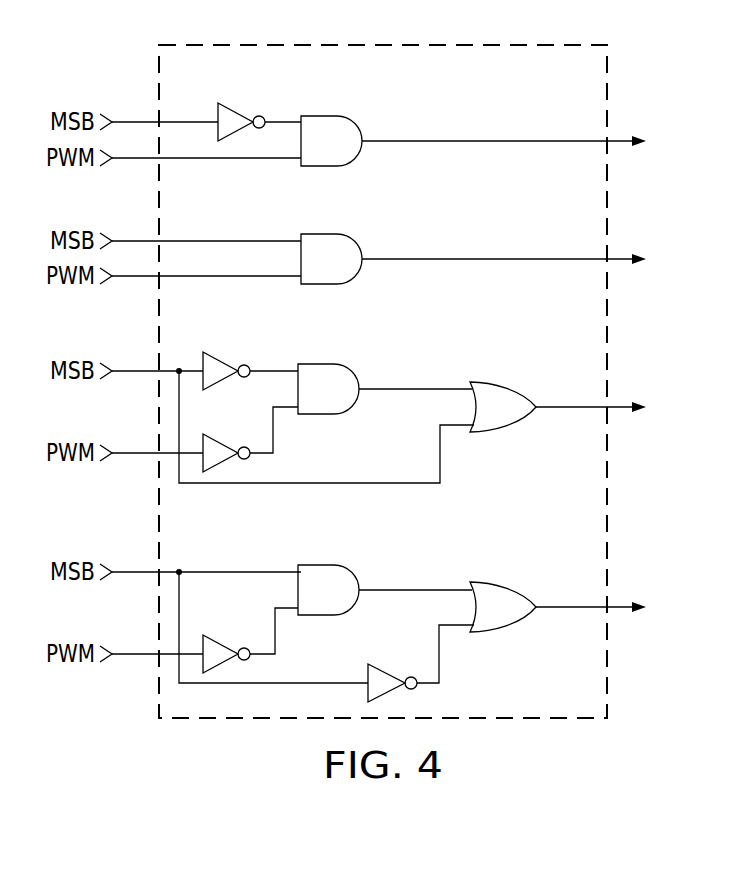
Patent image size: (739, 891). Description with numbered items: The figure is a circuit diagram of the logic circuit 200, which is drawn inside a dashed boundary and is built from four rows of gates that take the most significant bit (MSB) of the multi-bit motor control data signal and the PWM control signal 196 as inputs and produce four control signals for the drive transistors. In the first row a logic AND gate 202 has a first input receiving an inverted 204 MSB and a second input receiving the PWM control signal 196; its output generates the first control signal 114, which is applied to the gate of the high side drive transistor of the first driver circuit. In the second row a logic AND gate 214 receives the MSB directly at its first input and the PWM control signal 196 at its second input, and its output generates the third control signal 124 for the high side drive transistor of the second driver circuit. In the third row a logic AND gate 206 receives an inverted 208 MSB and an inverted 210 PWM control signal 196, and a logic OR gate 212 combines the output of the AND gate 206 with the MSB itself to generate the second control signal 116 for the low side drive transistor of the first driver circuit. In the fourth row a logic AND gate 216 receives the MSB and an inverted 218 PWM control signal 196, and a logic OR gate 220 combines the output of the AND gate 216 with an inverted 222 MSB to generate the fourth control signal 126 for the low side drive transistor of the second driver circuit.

The logic circuit 200 is at (609, 338).
The PWM control signal 196 is at (121, 686).
The inverted most significant bit 204 is at (238, 107).
The logic AND gate 202 is at (323, 116).
The first control signal 114 is at (472, 140).
The logic AND gate 214 is at (323, 234).
The third control signal 124 is at (472, 258).
The inverted most significant bit 208 is at (224, 354).
The inverted PWM control signal 210 is at (224, 436).
The logic AND gate 206 is at (323, 363).
The logic OR gate 212 is at (491, 382).
The second control signal 116 is at (557, 408).
The logic AND gate 216 is at (323, 564).
The inverted PWM control signal 218 is at (224, 636).
The inverted most significant bit 222 is at (389, 667).
The logic OR gate 220 is at (491, 582).
The fourth control signal 126 is at (557, 608).